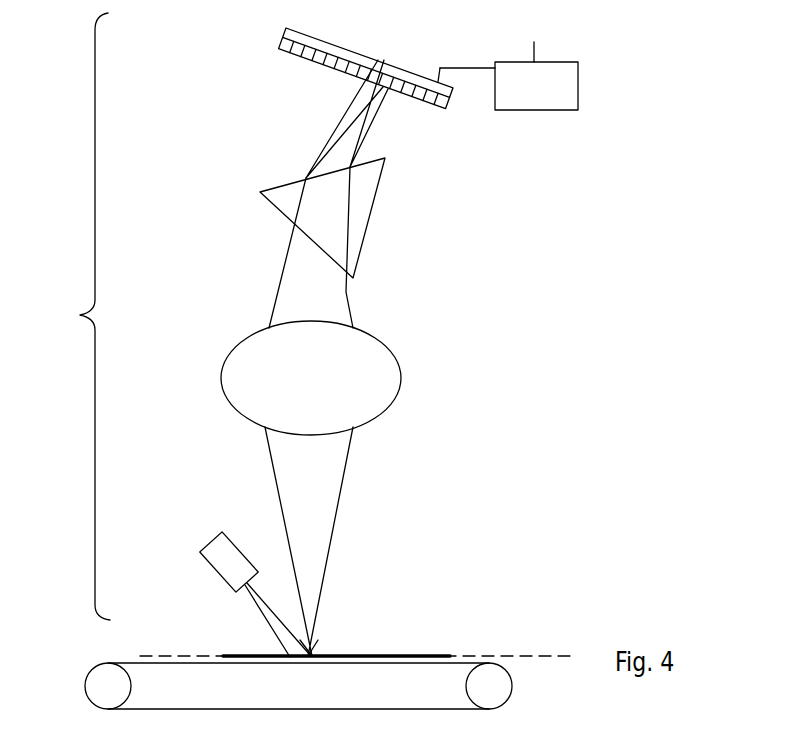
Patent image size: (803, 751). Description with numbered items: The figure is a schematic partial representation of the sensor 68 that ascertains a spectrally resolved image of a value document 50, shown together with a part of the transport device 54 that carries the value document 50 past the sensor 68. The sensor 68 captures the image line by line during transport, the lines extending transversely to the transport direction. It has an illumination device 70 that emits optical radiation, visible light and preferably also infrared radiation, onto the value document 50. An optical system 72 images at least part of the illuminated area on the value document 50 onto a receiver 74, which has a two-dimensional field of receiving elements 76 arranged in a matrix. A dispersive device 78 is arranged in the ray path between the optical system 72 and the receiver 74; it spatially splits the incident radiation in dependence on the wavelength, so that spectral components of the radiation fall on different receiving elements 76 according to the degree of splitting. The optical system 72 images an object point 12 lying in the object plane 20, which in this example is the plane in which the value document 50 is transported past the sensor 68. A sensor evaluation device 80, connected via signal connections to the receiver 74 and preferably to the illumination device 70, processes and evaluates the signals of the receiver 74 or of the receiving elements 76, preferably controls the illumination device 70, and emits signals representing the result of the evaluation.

The object point 12 is at (318, 650).
The object plane 20 is at (525, 653).
The value document 50 is at (395, 655).
The transport device 54 is at (77, 645).
The sensor 68 is at (68, 316).
The illumination device 70 is at (218, 545).
The optical system 72 is at (391, 372).
The receiver 74 is at (376, 54).
The receiving elements 76 is at (378, 58).
The dispersive device 78 is at (365, 238).
The sensor evaluation device 80 is at (568, 96).